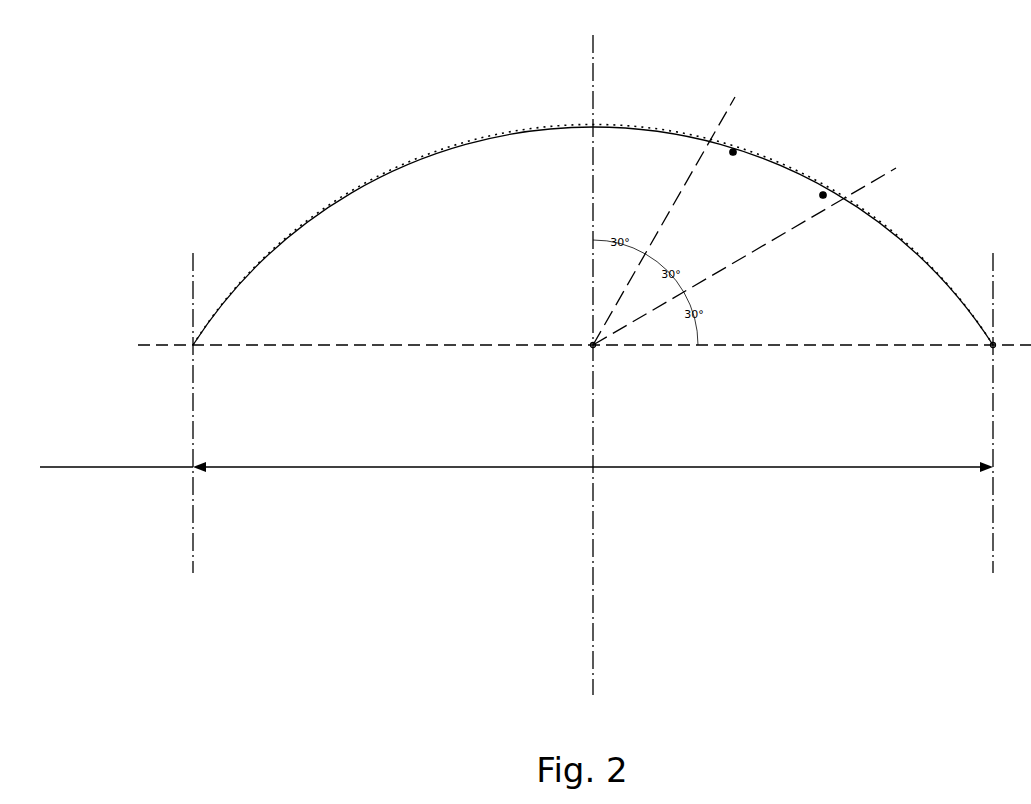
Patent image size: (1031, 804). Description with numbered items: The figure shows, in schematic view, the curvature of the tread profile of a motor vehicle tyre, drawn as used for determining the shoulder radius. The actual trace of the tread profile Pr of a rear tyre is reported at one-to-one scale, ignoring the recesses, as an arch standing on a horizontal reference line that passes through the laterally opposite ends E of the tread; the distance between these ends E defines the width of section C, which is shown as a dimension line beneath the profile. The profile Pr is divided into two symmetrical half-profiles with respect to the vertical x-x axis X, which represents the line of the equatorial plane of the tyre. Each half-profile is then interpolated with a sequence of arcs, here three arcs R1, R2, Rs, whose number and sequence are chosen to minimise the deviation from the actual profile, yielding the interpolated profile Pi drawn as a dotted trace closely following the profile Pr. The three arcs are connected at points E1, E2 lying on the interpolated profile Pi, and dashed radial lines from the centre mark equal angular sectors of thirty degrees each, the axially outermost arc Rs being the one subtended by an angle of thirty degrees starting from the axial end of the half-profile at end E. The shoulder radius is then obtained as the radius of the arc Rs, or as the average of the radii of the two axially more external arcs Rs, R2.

The x-x axis X is at (582, 365).
The width of section C is at (516, 456).
The tread profile Pr is at (330, 213).
The interpolated profile Pi is at (493, 140).
The arc R1 is at (643, 185).
The arc R2 is at (756, 222).
The arc Rs is at (887, 308).
The connection point E1 is at (741, 139).
The connection point E2 is at (834, 180).
The end of the tread E is at (1000, 334).